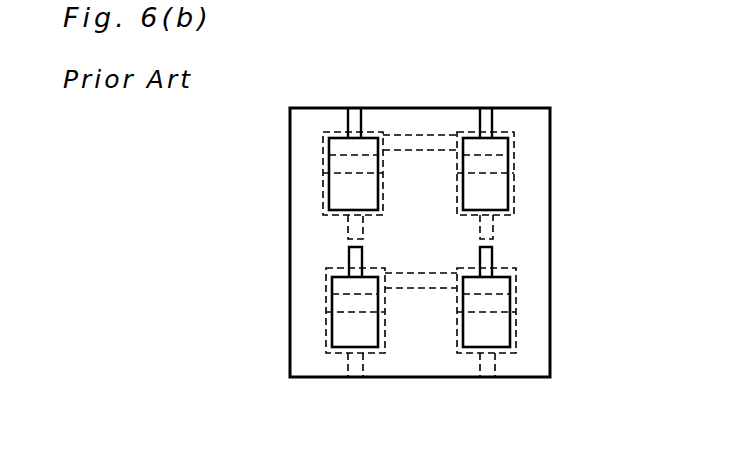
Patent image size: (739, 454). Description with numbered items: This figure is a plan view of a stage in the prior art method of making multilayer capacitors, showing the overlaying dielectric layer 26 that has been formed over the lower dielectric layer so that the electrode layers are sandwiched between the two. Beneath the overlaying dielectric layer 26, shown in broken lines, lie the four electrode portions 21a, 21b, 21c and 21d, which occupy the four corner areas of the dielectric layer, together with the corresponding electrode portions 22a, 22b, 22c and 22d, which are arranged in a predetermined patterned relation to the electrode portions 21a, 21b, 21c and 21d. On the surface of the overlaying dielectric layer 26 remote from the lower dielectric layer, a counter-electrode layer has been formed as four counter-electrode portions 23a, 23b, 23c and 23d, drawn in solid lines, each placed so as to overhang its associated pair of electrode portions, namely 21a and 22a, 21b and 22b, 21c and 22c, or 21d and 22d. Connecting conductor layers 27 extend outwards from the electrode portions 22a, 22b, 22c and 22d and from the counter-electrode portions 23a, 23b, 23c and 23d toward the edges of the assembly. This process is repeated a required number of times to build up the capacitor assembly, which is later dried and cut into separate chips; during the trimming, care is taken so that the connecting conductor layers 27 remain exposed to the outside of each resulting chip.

The overlaying dielectric layer 26 is at (312, 365).
The electrode portion 21a is at (370, 133).
The electrode portion 21b is at (507, 133).
The electrode portion 21c is at (383, 270).
The electrode portion 21d is at (516, 277).
The electrode portion 22a is at (323, 191).
The electrode portion 22b is at (514, 195).
The electrode portion 22c is at (327, 332).
The electrode portion 22d is at (516, 333).
The counter-electrode portion 23a is at (338, 162).
The counter-electrode portion 23b is at (500, 163).
The counter-electrode portion 23c is at (340, 302).
The counter-electrode portion 23d is at (500, 303).
The connecting conductor layer 27 is at (345, 113).